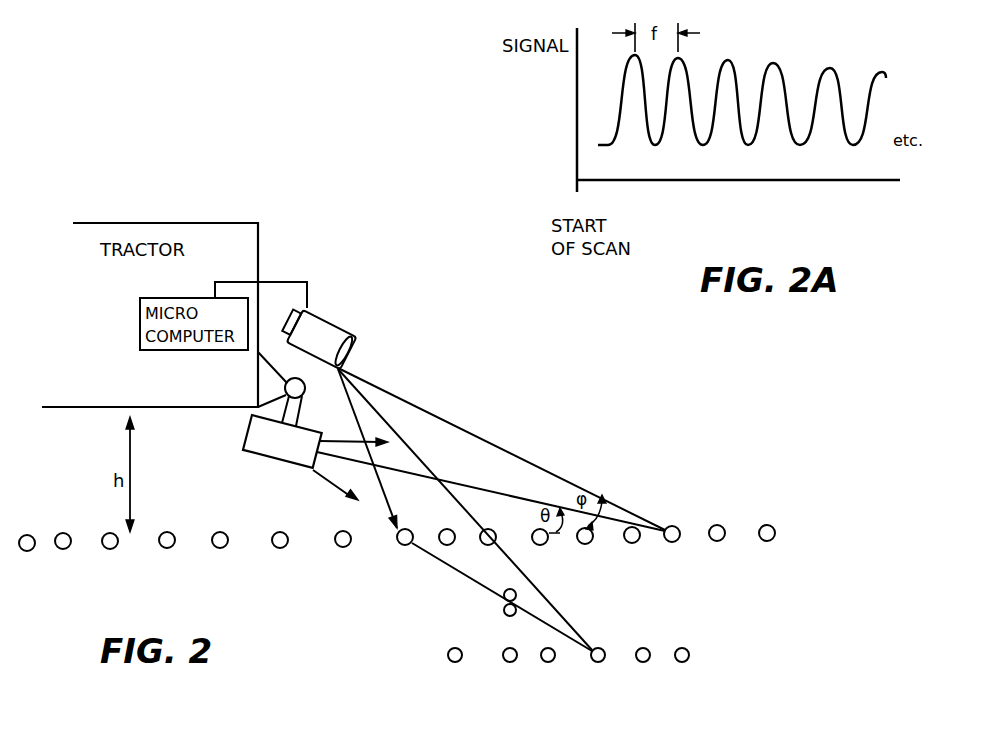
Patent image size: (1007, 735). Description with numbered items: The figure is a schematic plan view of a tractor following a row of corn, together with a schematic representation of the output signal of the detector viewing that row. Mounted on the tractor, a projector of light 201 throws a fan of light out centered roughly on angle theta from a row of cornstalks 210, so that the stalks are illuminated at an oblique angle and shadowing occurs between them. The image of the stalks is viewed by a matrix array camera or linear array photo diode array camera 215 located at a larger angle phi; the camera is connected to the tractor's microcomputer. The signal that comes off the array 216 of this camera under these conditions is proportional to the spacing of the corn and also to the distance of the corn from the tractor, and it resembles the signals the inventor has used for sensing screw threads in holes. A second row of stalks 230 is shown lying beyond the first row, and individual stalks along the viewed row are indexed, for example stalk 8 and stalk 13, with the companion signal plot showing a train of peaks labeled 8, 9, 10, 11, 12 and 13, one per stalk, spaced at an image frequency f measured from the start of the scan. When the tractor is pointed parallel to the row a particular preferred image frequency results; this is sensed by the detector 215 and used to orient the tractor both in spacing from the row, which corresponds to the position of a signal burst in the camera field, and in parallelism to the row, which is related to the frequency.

In FIG. 2, the projector of light 201 is at (246, 441).
In FIG. 2, the matrix array camera or linear array photo diode array camera 215 is at (335, 325).
In FIG. 2, the array 216 is at (308, 307).
In FIG. 2, the stalk 8 is at (398, 546).
In FIG. 2A, the stalk 8 is at (626, 128).
In FIG. 2A, the stalk 9 signal peak 9 is at (679, 130).
In FIG. 2A, the stalk 10 signal peak 10 is at (725, 131).
In FIG. 2A, the stalk 11 signal peak 11 is at (774, 132).
In FIG. 2A, the stalk 12 signal peak 12 is at (826, 135).
In FIG. 2, the stalk 13 is at (594, 661).
In FIG. 2A, the stalk 13 is at (872, 137).
In FIG. 2, the row of cornstalks 210 is at (725, 541).
In FIG. 2, the adjacent row of plant stalks 230 is at (448, 658).